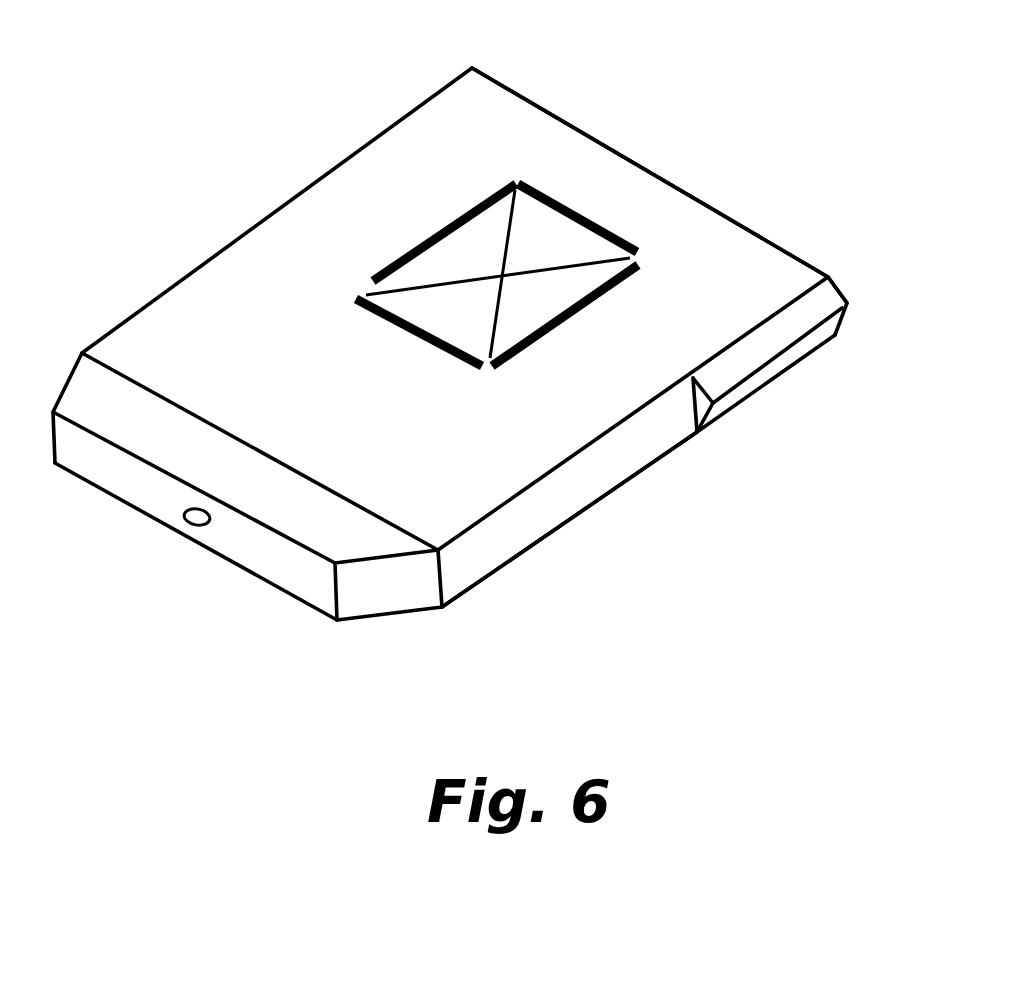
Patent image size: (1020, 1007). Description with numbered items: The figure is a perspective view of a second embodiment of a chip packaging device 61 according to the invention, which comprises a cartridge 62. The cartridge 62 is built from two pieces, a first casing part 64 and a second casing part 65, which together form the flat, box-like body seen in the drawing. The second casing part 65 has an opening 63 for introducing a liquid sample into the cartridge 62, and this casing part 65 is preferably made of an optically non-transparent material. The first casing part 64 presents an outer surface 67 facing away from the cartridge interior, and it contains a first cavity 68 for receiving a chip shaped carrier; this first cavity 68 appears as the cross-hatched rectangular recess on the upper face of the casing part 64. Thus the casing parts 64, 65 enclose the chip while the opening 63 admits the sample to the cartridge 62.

The chip packaging device 61 is at (786, 110).
The cartridge 62 is at (243, 185).
The opening 63 is at (185, 520).
The first casing part 64 is at (475, 102).
The second casing part 65 is at (573, 513).
The outer surface 67 is at (725, 253).
The first cavity 68 is at (433, 267).